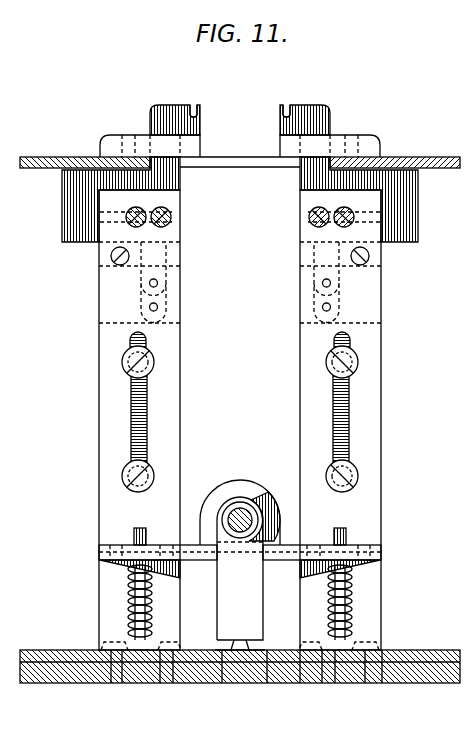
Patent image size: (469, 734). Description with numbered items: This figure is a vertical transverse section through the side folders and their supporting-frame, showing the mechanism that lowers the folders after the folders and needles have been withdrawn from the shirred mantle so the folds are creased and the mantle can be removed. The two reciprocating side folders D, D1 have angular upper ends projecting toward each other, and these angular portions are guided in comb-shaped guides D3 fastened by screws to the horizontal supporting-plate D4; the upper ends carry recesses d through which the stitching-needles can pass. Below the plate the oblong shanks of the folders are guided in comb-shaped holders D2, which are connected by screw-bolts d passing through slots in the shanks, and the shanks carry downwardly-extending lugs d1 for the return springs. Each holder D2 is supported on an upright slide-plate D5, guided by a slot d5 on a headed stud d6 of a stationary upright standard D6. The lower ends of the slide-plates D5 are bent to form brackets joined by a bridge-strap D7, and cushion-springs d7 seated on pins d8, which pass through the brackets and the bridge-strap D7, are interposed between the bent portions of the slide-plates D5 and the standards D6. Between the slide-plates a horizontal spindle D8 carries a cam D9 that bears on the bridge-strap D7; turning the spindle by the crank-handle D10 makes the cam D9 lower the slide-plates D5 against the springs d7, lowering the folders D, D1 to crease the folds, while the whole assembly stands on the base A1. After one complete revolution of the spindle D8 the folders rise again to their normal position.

The side folder D is at (116, 163).
The side folder D1 is at (363, 163).
The comb-shaped holder D2 is at (300, 241).
The comb-shaped guide D3 is at (240, 133).
The horizontal supporting-plate D4 is at (240, 149).
The upright slide-plate D5 is at (99, 406).
The stationary upright standard D6 is at (173, 613).
The bridge-strap D7 is at (105, 548).
The horizontal spindle D8 is at (243, 508).
The cam D9 is at (219, 501).
The crank-handle D10 is at (240, 573).
The screw-bolt / recess d is at (194, 111).
The downwardly-extending lug d1 is at (158, 283).
The slot d5 is at (240, 419).
The headed stud d6 is at (155, 363).
The cushion-spring d7 is at (128, 598).
The pin d8 is at (395, 522).
The base A1 is at (240, 652).